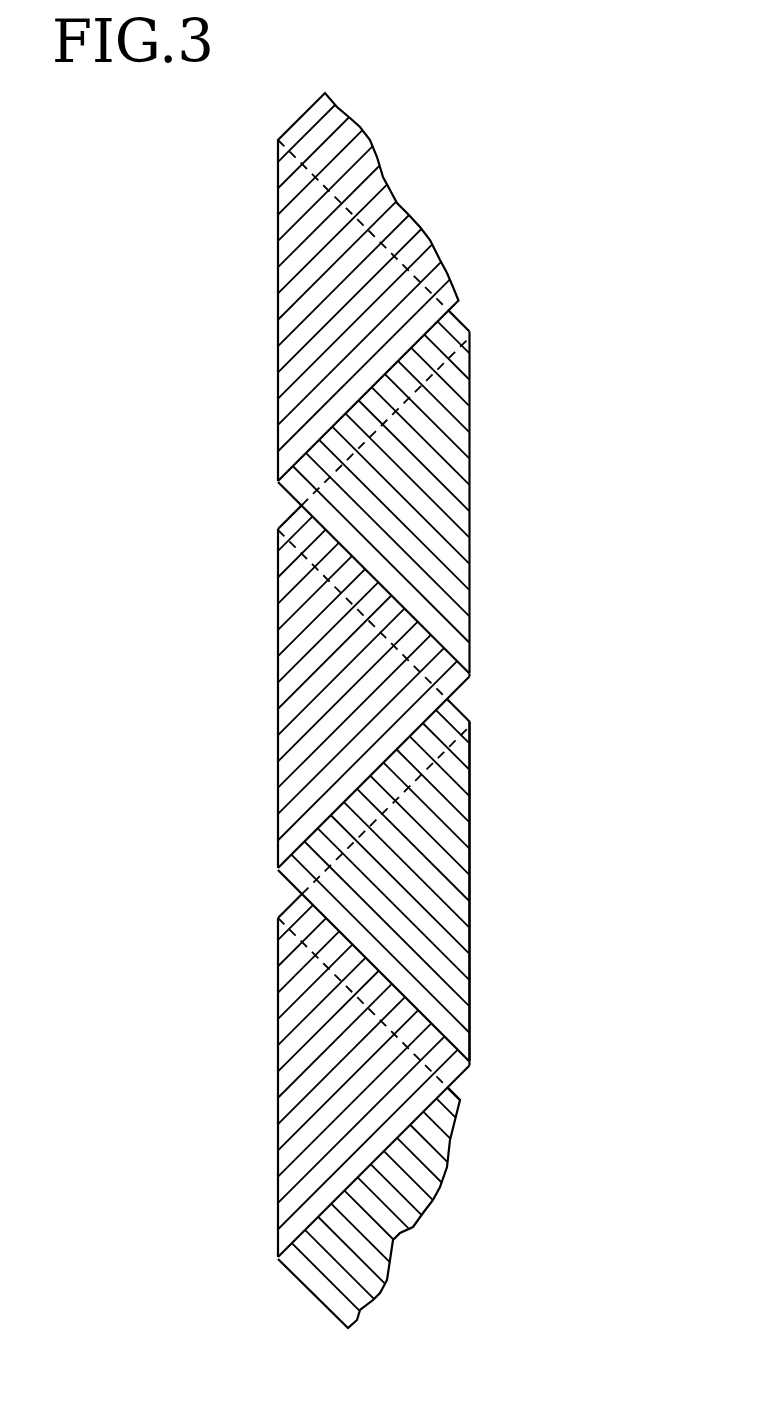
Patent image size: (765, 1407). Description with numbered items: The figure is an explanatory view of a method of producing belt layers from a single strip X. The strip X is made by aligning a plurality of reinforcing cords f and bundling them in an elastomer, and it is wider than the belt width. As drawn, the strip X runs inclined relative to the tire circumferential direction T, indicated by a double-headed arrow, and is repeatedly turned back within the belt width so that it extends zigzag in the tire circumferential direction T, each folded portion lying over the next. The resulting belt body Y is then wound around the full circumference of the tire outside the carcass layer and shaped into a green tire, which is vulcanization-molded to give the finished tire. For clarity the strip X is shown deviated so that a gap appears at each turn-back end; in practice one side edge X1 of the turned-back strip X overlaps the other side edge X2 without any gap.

The reinforcing cords f is at (437, 845).
The strip X is at (432, 1188).
The side edge of the strip X1 is at (437, 988).
The other side edge of the strip X2 is at (355, 995).
The belt body Y is at (472, 963).
The tire circumferential direction T is at (163, 605).